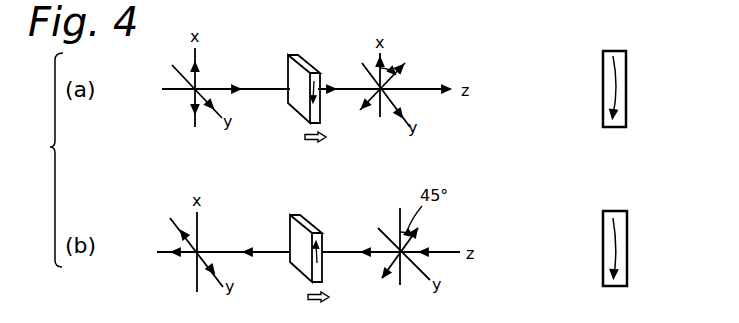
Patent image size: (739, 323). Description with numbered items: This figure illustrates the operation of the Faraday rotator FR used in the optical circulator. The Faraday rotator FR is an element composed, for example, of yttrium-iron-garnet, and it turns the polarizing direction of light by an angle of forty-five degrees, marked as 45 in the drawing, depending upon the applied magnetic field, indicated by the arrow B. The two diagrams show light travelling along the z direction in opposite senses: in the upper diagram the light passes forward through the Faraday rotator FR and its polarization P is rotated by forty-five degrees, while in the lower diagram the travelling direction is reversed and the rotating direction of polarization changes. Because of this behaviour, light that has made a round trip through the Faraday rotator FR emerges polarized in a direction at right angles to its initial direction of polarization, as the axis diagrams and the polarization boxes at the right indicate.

The Faraday rotator FR is at (288, 63).
The magnetic field B is at (321, 227).
The polarization direction P is at (387, 82).
The 45 degree rotation angle 45 is at (392, 65).